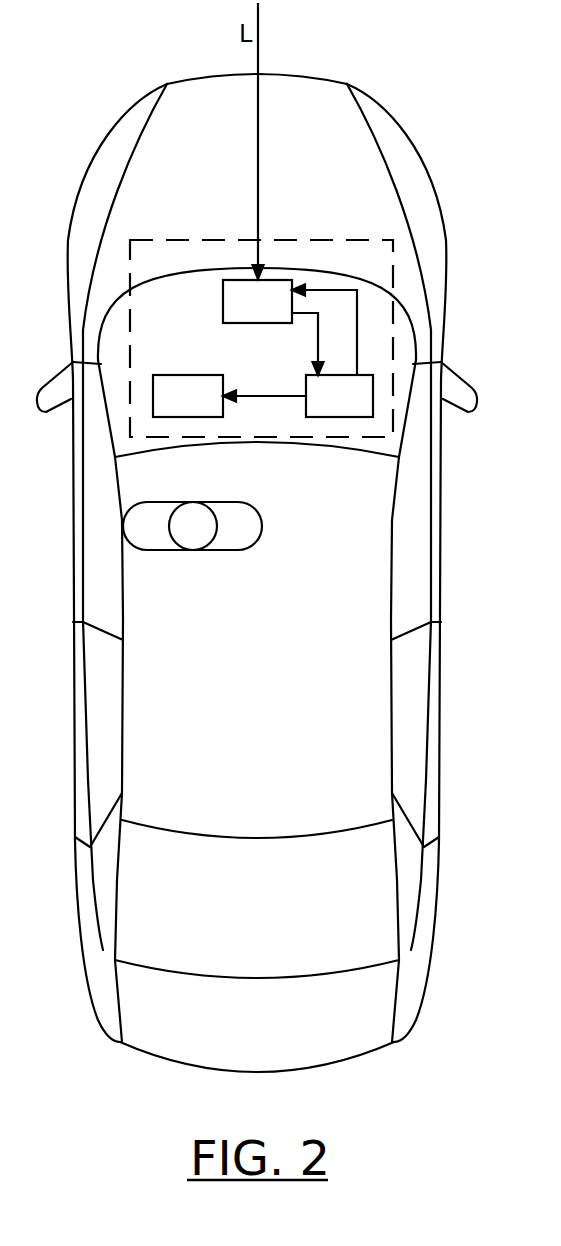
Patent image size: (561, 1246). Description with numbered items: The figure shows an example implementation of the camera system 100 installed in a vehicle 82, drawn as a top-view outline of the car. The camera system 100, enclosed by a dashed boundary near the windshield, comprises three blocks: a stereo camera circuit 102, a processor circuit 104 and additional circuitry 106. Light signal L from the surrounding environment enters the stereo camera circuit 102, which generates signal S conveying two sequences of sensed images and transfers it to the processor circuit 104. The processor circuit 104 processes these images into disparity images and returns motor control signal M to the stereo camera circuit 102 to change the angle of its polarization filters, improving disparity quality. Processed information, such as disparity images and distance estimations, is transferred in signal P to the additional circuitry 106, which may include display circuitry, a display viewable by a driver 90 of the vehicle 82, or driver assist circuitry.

The vehicle 82 is at (122, 115).
The driver 90 is at (222, 502).
The camera system 100 is at (213, 240).
The stereo camera circuit 102 is at (279, 314).
The processor circuit 104 is at (361, 409).
The additional circuitry 106 is at (167, 409).